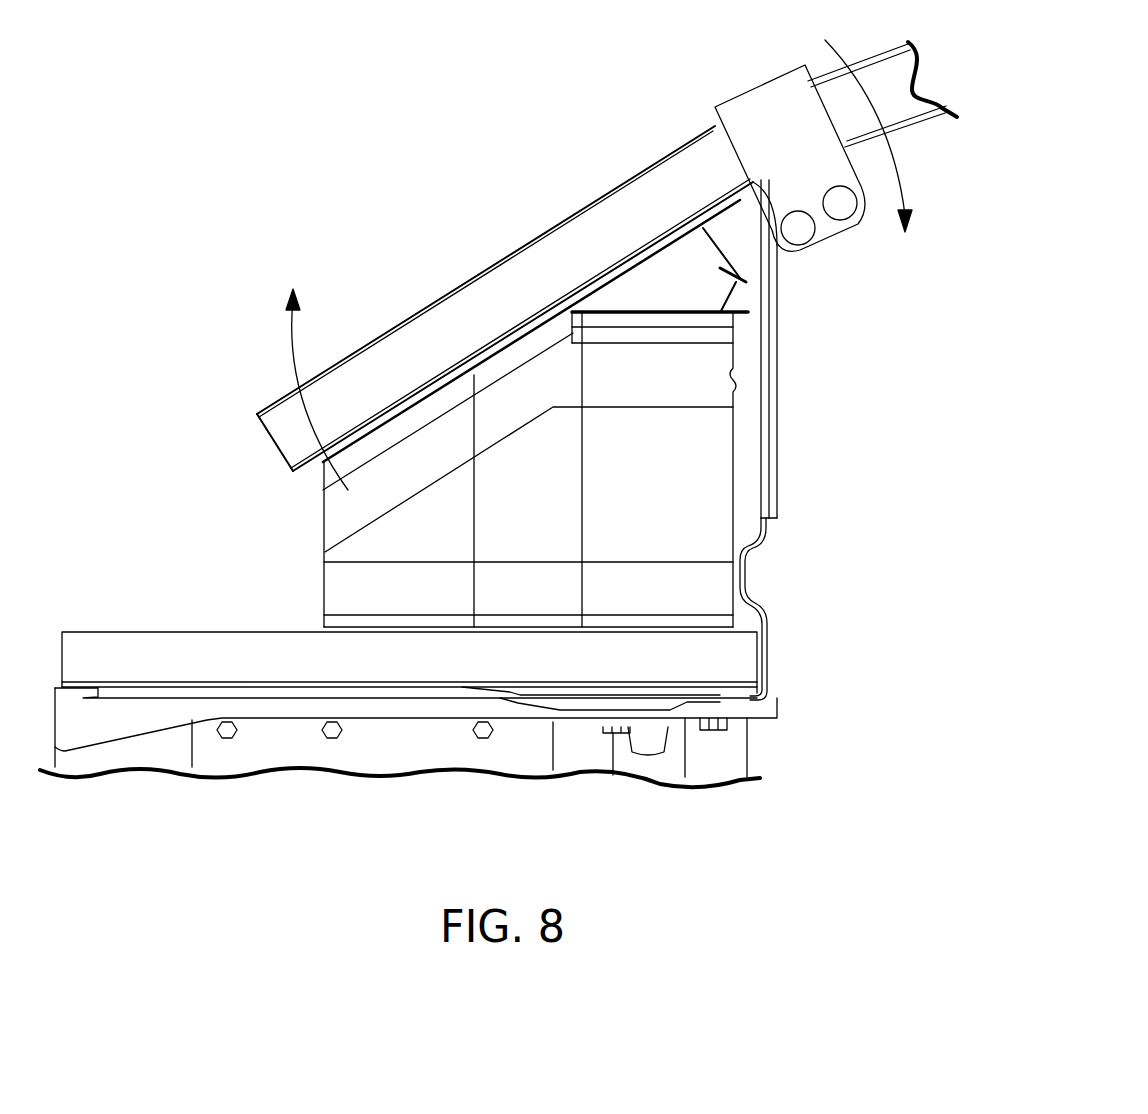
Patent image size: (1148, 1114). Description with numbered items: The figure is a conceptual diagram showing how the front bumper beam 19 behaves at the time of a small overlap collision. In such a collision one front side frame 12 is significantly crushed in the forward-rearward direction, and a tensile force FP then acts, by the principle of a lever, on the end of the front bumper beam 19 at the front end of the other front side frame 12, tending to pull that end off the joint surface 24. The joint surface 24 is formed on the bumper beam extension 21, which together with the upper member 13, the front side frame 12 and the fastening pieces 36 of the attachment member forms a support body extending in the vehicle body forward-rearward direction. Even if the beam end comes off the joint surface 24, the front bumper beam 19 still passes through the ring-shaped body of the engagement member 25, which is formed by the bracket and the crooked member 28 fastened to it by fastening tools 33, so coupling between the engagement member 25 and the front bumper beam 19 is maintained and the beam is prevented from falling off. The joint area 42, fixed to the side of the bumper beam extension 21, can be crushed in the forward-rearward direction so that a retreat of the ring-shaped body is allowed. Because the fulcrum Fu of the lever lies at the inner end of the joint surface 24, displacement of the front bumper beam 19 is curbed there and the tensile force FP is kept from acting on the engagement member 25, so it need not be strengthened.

The front side frame 12 is at (737, 755).
The upper member 13 is at (143, 762).
The front bumper beam 19 is at (620, 185).
The bumper beam extension 21 is at (333, 528).
The joint surface 24 is at (450, 375).
The engagement member 25 is at (778, 387).
The crooked member 28 is at (772, 96).
The fastening tool 33 is at (843, 207).
The fastening piece 36 is at (190, 645).
The joint area 42 is at (743, 587).
The tensile force FP is at (292, 368).
The fulcrum Fu is at (560, 317).